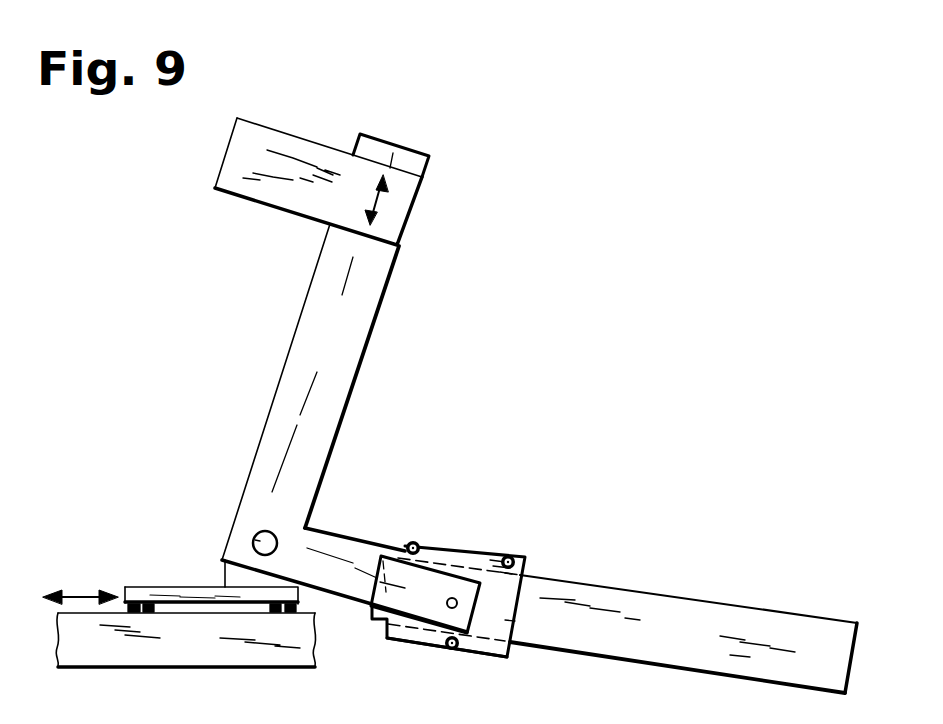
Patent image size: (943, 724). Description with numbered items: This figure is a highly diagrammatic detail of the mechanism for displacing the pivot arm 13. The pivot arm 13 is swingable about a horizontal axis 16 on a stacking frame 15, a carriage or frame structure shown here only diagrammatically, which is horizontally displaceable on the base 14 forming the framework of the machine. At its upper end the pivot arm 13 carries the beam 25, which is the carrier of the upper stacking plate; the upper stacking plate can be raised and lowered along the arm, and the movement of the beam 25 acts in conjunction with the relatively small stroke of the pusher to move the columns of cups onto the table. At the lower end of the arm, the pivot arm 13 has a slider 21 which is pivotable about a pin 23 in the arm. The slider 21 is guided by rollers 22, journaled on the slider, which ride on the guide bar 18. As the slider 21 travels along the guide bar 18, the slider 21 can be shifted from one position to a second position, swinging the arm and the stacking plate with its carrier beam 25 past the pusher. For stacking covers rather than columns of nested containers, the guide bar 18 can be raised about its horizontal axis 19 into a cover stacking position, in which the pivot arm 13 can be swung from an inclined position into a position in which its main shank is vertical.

The pivot arm 13 is at (300, 390).
The base 14 is at (165, 648).
The stacking frame 15 is at (170, 593).
The horizontal axis 16 is at (253, 540).
The guide bar 18 is at (779, 627).
The horizontal axis 19 is at (447, 680).
The slider 21 is at (460, 553).
The rollers 22 is at (511, 558).
The pin 23 is at (450, 607).
The beam 25 is at (273, 187).